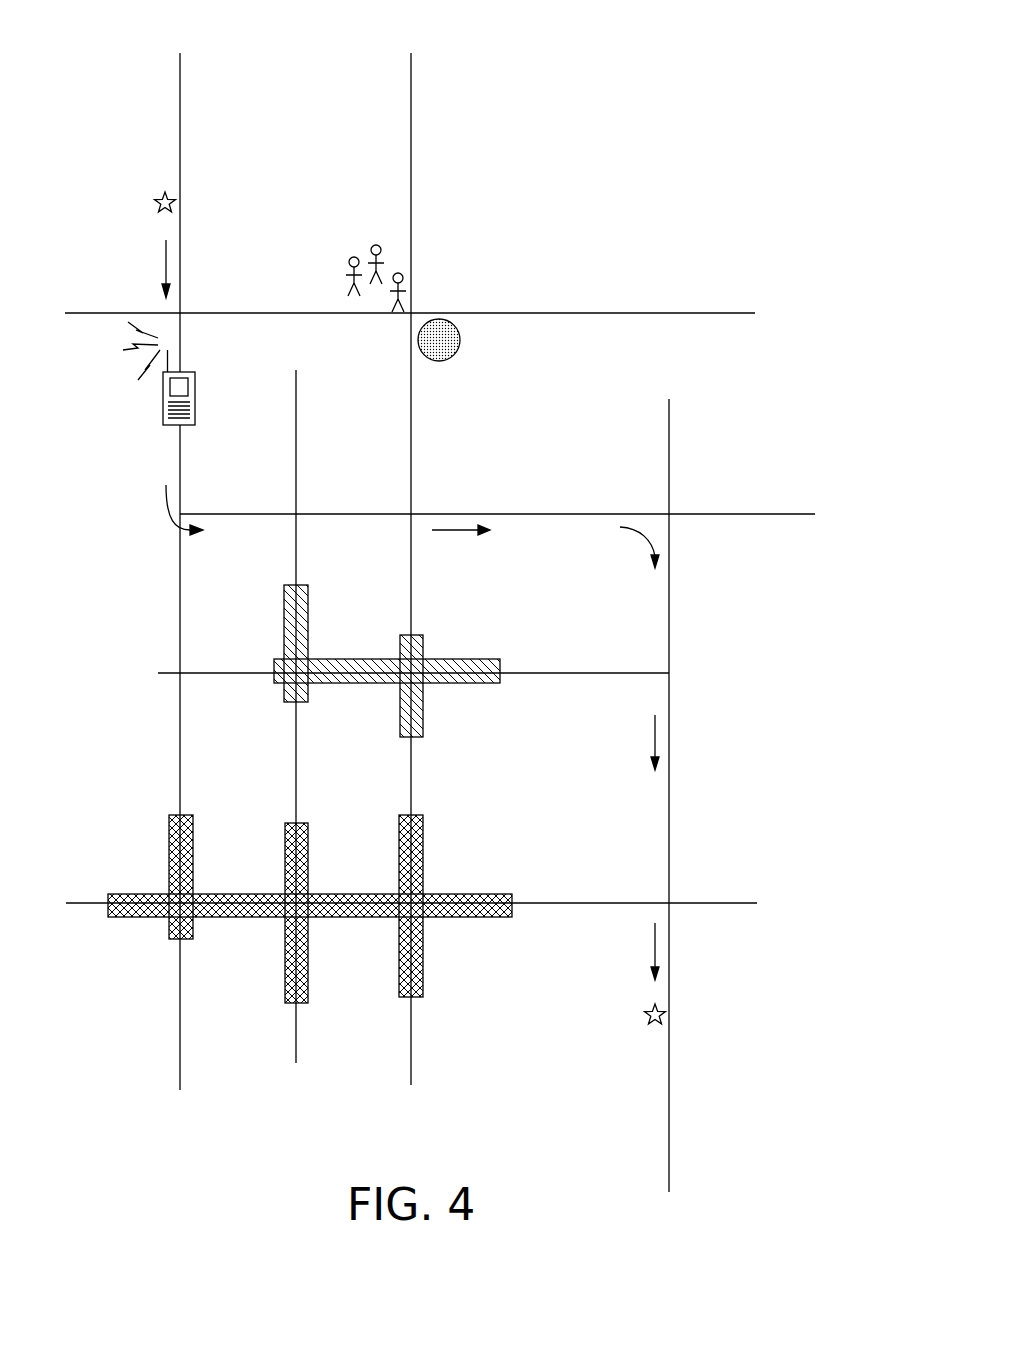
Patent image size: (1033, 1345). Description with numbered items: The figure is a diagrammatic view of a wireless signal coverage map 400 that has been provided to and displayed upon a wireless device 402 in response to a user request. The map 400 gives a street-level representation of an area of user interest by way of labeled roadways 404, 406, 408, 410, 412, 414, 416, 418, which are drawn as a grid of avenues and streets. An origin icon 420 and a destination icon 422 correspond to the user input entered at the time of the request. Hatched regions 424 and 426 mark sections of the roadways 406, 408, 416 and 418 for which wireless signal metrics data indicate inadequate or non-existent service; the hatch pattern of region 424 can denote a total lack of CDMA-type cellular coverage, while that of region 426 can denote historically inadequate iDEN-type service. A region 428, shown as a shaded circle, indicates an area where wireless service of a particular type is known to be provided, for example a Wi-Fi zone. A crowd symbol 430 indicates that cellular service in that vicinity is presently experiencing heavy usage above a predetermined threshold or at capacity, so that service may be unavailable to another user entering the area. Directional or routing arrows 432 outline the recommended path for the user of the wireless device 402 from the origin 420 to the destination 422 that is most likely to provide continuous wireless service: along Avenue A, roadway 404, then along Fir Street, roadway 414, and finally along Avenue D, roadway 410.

The wireless signal coverage map 400 is at (640, 28).
The wireless device 402 is at (160, 405).
The roadway 404 is at (180, 83).
The roadway 406 is at (296, 380).
The roadway 408 is at (411, 80).
The roadway 410 is at (670, 425).
The roadway 412 is at (718, 312).
The roadway 414 is at (787, 513).
The roadway 416 is at (578, 672).
The roadway 418 is at (748, 902).
The origin icon 420 is at (152, 207).
The destination icon 422 is at (648, 1020).
The region 424 is at (400, 646).
The region 426 is at (228, 893).
The region 428 is at (461, 340).
The crowd symbol 430 is at (357, 252).
The directional or routing arrows 432 is at (165, 272).